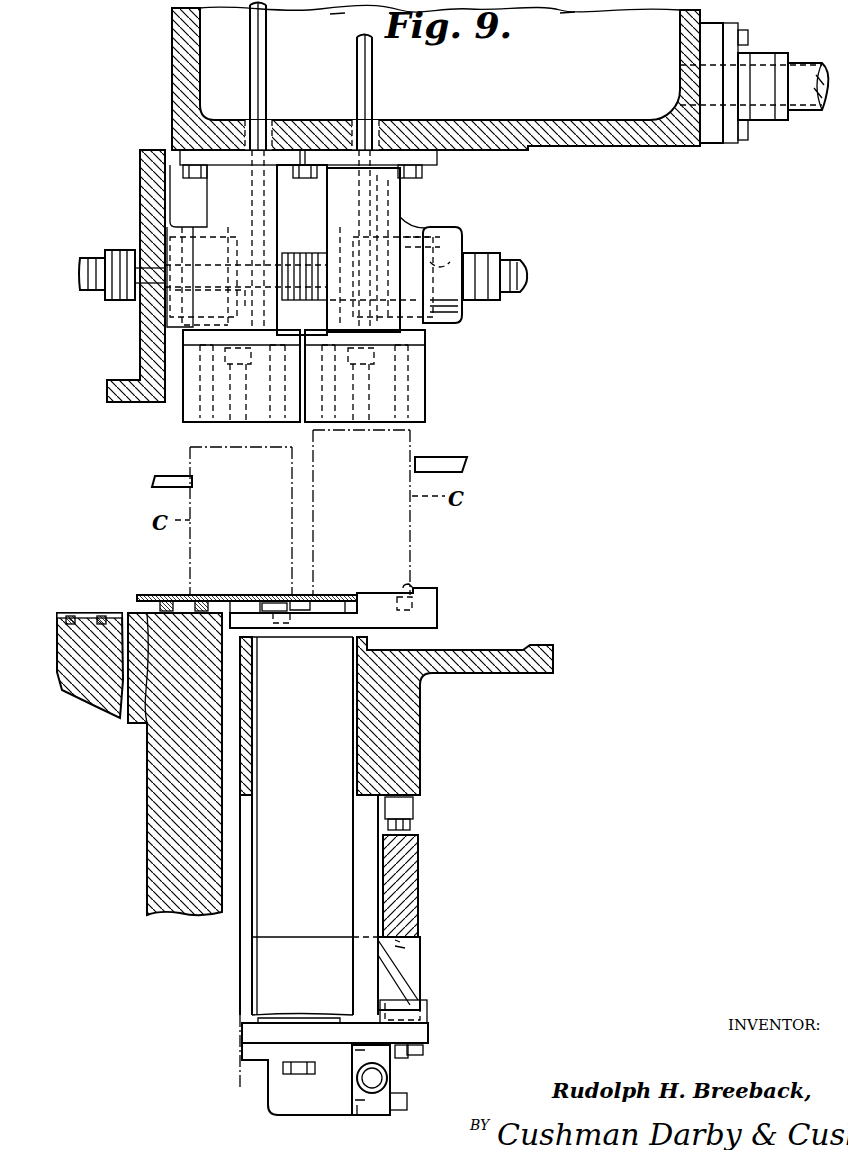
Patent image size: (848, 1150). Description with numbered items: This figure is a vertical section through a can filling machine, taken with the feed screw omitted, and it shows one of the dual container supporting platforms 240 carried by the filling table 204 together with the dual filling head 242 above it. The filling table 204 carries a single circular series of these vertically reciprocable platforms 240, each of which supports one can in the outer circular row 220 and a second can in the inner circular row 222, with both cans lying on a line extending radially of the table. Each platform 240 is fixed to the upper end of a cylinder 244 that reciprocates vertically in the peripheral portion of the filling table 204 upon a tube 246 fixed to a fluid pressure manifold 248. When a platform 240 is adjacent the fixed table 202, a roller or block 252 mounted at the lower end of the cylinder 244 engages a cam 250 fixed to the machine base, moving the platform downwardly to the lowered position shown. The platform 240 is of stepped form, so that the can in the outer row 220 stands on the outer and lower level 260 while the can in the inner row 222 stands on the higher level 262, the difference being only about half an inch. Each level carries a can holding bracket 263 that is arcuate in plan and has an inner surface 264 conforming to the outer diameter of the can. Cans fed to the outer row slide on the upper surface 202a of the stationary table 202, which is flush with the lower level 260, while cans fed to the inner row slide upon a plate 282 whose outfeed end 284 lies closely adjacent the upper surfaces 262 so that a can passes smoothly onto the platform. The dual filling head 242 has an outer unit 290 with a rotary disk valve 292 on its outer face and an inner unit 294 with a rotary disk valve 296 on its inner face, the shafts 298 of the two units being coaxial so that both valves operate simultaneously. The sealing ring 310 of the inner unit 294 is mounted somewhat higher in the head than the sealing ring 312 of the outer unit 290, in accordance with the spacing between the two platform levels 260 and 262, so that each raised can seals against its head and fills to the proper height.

The fixed table 202 is at (147, 740).
The upper surface of stationary table 202a is at (83, 613).
The filling table 204 is at (507, 665).
The outer circular row 220 is at (240, 596).
The inner circular row 222 is at (410, 580).
The vertically reciprocable platform 240 is at (430, 614).
The filling head 242 is at (388, 227).
The cylinder 244 is at (258, 902).
The tube 246 is at (243, 1018).
The fluid pressure manifold 248 is at (393, 1080).
The cam 250 is at (420, 893).
The roller or block 252 is at (420, 965).
The outer and lower level 260 is at (262, 612).
The higher level 262 is at (395, 592).
The can holding bracket 263 is at (268, 612).
The inner surface of bracket 264 is at (405, 590).
The plate 282 is at (160, 578).
The outfeed end of plate 284 is at (360, 596).
The outer unit 290 is at (204, 226).
The rotary disk valve 292 is at (146, 318).
The inner unit 294 is at (398, 233).
The rotary disk valve 296 is at (459, 312).
The shaft 298 is at (155, 272).
The sealing ring 310 is at (412, 373).
The sealing ring 312 is at (180, 398).